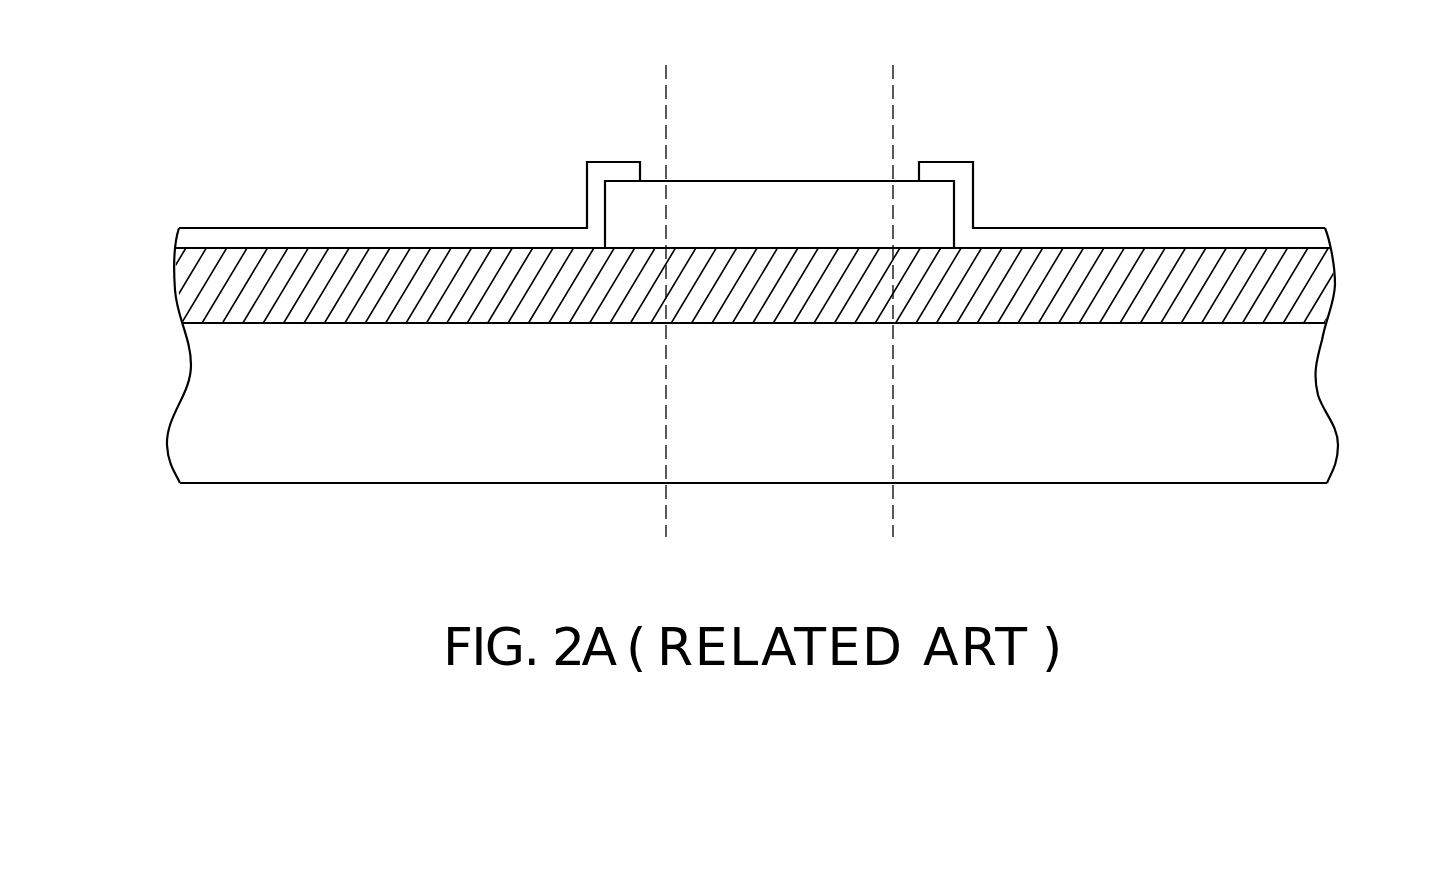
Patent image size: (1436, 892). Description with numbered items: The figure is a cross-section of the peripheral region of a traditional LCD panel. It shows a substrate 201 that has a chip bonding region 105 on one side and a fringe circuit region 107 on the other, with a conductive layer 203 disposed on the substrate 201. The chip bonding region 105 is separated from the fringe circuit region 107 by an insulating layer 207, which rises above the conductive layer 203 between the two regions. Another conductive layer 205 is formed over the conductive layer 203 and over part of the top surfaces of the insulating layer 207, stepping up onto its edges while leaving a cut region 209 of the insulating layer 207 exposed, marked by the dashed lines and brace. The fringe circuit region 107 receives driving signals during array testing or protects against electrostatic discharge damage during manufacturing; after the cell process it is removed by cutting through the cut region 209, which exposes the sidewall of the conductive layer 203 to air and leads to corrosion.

The chip bonding region 105 is at (555, 200).
The fringe circuit region 107 is at (1020, 202).
The substrate 201 is at (1303, 408).
The conductive layer 203 is at (1303, 287).
The conductive layer 205 is at (203, 238).
The insulating layer 207 is at (943, 197).
The cut region 209 is at (667, 45).